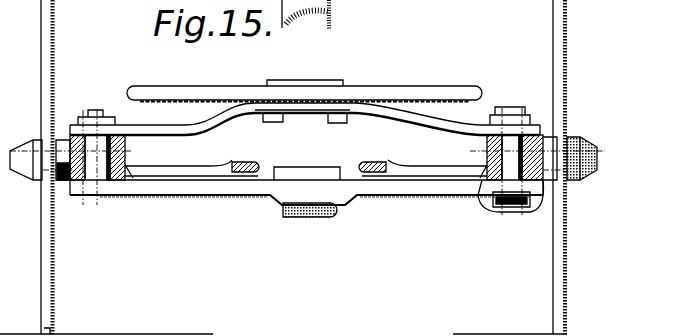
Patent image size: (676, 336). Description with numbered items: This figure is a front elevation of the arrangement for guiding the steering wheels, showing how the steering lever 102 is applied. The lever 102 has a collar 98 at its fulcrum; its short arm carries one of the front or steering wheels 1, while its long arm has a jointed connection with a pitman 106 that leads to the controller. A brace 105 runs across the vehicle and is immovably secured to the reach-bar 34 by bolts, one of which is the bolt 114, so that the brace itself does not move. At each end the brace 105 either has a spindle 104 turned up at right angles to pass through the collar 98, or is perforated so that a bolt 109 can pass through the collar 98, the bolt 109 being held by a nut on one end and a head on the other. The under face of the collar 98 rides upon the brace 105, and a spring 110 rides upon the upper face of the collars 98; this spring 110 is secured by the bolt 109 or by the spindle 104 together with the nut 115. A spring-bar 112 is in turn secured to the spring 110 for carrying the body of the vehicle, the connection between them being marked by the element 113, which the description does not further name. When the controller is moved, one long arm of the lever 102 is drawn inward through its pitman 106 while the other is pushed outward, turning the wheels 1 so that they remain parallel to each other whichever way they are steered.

The steering wheel 1 is at (41, 249).
The reach-bar 34 is at (318, 170).
The collar 98 is at (123, 177).
The lever 102 is at (187, 181).
The spindle 104 is at (125, 153).
The brace 105 is at (392, 195).
The pitman 106 is at (258, 165).
The bolt 109 is at (513, 220).
The spring 110 is at (229, 113).
The spring-bar 112 is at (441, 93).
The rivet joint 113 is at (345, 108).
The bolt 114 is at (326, 216).
The nut 115 is at (76, 116).